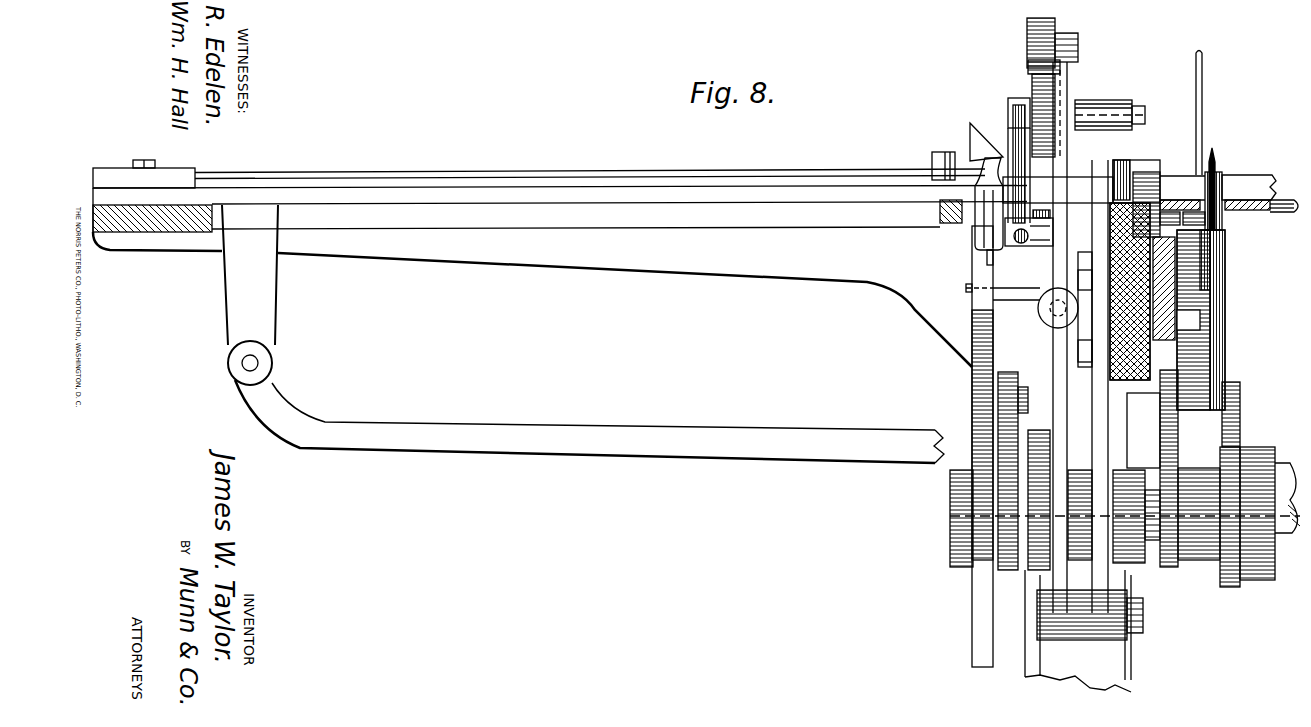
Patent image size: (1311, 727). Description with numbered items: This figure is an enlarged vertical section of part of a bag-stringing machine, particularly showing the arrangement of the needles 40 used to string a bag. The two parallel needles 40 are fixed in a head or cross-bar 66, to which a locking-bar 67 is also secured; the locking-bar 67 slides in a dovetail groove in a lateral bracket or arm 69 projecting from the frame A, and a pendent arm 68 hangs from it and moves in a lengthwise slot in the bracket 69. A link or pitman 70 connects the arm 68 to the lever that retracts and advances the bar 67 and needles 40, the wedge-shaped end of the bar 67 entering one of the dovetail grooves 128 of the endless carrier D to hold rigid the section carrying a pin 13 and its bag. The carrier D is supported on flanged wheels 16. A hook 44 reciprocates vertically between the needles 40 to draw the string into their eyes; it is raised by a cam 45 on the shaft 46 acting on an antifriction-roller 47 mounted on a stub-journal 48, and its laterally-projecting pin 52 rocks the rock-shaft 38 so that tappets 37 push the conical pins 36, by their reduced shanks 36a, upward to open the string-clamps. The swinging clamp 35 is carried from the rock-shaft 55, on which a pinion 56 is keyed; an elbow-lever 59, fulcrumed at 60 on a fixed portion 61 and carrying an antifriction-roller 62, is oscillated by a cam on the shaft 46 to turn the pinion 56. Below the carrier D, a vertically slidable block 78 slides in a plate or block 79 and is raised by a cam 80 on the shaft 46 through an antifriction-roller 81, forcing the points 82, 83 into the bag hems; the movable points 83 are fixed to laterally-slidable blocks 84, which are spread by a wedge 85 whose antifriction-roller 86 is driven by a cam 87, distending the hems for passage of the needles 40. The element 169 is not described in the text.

The head or cross-bar 66 is at (144, 174).
The needles 40 is at (590, 164).
The locking-bar 67 is at (549, 192).
The lateral bracket or arm 69 is at (532, 277).
The pendent arm 68 is at (250, 295).
The link or pitman 70 is at (589, 421).
The hook 44 is at (970, 141).
The swinging clamp 35 is at (970, 189).
The conical pin 36 is at (975, 230).
The reduced shank 36a is at (994, 262).
The rock-shaft 38 is at (1010, 143).
The pinion 56 is at (1032, 100).
The elbow-lever 59 is at (1062, 186).
The rock-shaft 55 is at (1108, 100).
The tappets 37 is at (1015, 292).
The laterally-projecting pin 52 is at (980, 304).
The fixed portion of the machine 61 is at (1106, 287).
The antifriction-roller 62 is at (1058, 582).
The frame A is at (1142, 258).
The flanged wheels 16 is at (1150, 180).
The pin 13 is at (1203, 90).
The points 82 is at (1215, 162).
The dovetail grooves 128 is at (1218, 187).
The endless traveling belt D is at (1215, 183).
The points 83 is at (1222, 216).
The rod 169 is at (1285, 215).
The vertically slidable block 78 is at (1210, 250).
The laterally-slidable blocks 84 is at (1218, 279).
The plate or block 79 is at (1208, 330).
The wedge 85 is at (1215, 362).
The antifriction-roller 86 is at (1240, 392).
The cam 87 is at (1240, 440).
The antifriction-roller 81 is at (1160, 398).
The cam 80 is at (1178, 458).
The shaft 46 is at (1282, 492).
The antifriction-roller 47 is at (1006, 376).
The stub-journal 48 is at (1025, 395).
The cam 45 is at (1018, 445).
The fulcrum 60 is at (1068, 638).